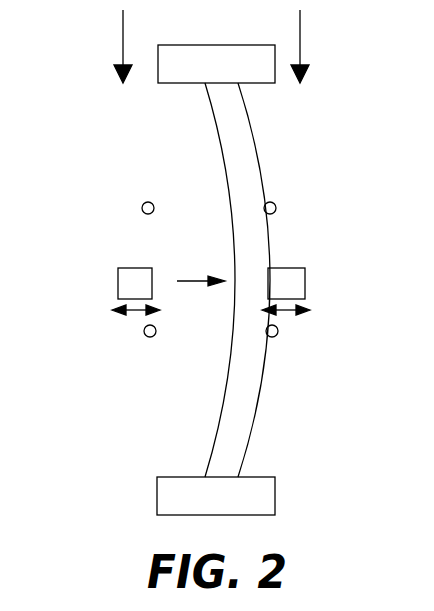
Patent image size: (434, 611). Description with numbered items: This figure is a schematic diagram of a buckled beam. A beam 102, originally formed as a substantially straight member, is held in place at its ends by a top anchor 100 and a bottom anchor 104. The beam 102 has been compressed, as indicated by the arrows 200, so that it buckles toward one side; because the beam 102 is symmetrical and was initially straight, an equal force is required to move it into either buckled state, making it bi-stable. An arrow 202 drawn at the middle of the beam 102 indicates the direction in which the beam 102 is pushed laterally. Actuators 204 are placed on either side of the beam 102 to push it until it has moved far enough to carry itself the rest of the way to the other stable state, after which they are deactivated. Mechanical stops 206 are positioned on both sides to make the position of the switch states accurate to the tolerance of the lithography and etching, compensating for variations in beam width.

The top anchor 100 is at (157, 80).
The beam 102 is at (233, 277).
The bottom anchor 104 is at (157, 495).
The compression arrows 200 is at (120, 48).
The lateral deflection of beam 202 is at (193, 282).
The actuator 204 is at (117, 283).
The mechanical stop 206 is at (143, 213).